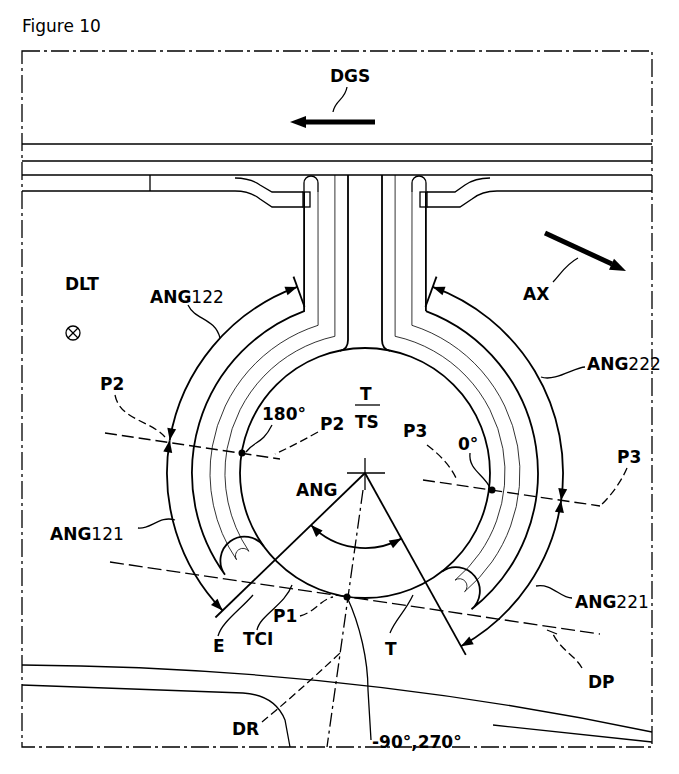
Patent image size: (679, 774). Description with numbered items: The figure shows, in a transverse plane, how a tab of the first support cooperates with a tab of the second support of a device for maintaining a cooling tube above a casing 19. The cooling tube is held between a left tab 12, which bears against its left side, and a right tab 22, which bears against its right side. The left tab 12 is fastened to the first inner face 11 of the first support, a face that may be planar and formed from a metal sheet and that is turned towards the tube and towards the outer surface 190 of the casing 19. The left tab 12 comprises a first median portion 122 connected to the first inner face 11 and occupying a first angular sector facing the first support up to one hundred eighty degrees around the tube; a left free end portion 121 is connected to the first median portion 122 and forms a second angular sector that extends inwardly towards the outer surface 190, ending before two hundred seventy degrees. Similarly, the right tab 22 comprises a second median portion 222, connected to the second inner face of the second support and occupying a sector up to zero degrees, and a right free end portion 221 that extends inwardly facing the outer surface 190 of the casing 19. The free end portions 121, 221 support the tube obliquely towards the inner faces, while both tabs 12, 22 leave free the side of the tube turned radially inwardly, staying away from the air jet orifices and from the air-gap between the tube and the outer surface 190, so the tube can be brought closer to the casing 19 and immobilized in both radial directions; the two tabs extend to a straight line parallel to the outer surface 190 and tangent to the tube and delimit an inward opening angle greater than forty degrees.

The first inner face 11 is at (82, 178).
The left tab 12 is at (405, 192).
The first median portion 122 is at (277, 352).
The left free end portion 121 is at (240, 513).
The right tab 22 is at (510, 427).
The second median portion 222 is at (455, 352).
The right free end portion 221 is at (487, 553).
The outer surface 190 is at (480, 700).
The casing 19 is at (513, 725).